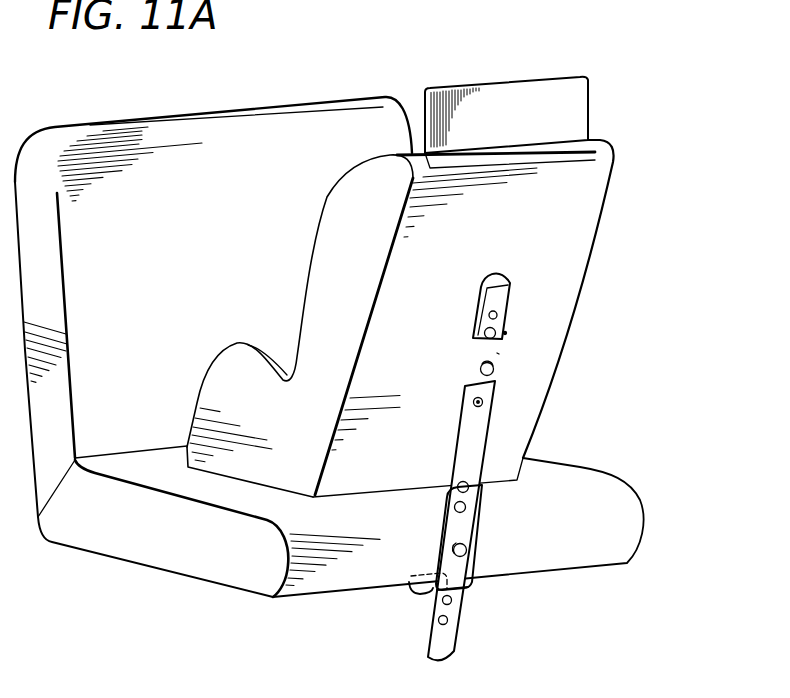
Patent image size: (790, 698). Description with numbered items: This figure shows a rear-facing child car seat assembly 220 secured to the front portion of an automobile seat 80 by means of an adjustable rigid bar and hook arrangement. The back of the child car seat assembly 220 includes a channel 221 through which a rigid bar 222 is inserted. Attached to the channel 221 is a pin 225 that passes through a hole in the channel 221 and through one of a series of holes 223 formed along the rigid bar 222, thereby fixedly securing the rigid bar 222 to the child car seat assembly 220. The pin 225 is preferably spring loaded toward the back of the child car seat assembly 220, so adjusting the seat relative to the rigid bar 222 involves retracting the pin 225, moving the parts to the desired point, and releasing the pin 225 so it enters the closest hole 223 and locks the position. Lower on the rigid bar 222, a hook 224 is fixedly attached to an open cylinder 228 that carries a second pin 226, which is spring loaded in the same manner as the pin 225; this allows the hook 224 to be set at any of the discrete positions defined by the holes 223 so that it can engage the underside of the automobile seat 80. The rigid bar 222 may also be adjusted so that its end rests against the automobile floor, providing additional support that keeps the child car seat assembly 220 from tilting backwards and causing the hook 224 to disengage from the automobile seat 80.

The automobile seat 80 is at (342, 103).
The child car seat assembly 220 is at (593, 173).
The channel 221 is at (497, 353).
The rigid bar 222 is at (478, 432).
The holes 223 is at (496, 315).
The hook 224 is at (418, 597).
The pin 225 is at (494, 370).
The pin 226 is at (469, 547).
The open cylinder 228 is at (466, 590).